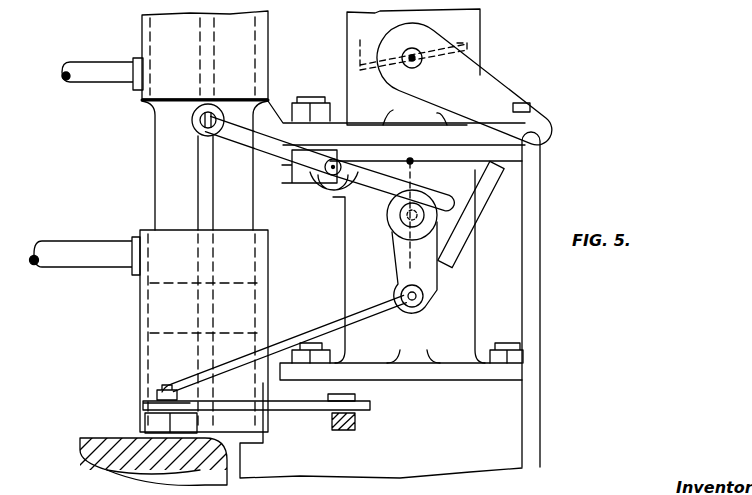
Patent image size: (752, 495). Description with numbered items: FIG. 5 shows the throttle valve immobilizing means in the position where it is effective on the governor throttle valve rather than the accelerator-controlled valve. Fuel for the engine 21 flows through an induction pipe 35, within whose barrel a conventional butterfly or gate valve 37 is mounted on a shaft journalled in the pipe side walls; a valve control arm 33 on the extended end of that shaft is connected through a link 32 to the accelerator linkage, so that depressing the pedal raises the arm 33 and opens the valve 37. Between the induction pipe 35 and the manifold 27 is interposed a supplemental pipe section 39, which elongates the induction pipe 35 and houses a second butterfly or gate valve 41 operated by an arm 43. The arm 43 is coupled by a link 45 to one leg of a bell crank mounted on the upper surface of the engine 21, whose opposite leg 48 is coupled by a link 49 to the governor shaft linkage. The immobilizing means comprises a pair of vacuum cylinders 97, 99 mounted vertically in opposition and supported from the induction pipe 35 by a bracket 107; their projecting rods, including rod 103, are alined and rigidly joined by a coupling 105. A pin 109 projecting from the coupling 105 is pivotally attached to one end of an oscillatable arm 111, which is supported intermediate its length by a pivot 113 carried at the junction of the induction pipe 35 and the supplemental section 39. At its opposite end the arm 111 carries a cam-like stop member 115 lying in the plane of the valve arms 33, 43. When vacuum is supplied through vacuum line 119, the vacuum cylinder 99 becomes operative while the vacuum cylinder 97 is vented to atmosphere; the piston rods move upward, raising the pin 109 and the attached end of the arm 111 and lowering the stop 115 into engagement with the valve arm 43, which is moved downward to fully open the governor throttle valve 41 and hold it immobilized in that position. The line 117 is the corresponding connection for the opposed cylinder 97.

The engine 21 is at (173, 464).
The manifold 27 is at (452, 443).
The link 32 is at (530, 181).
The valve control arm 33 is at (490, 98).
The induction pipe 35 is at (466, 25).
The butterfly or gate valve 37 is at (409, 46).
The supplemental pipe section 39 is at (345, 297).
The butterfly or gate valve 41 is at (413, 266).
The arm 43 is at (426, 299).
The link 45 is at (247, 361).
The leg 48 is at (364, 407).
The link 49 is at (334, 426).
The vacuum cylinder 97 is at (150, 37).
The vacuum cylinder 99 is at (160, 345).
The projecting rod 103 is at (207, 158).
The coupling 105 is at (190, 139).
The bracket 107 is at (178, 80).
The pin 109 is at (200, 121).
The oscillatable arm 111 is at (243, 153).
The pivot 113 is at (332, 181).
The cam-like stop member 115 is at (466, 216).
The plunger 117 is at (72, 64).
The vacuum line 119 is at (62, 248).